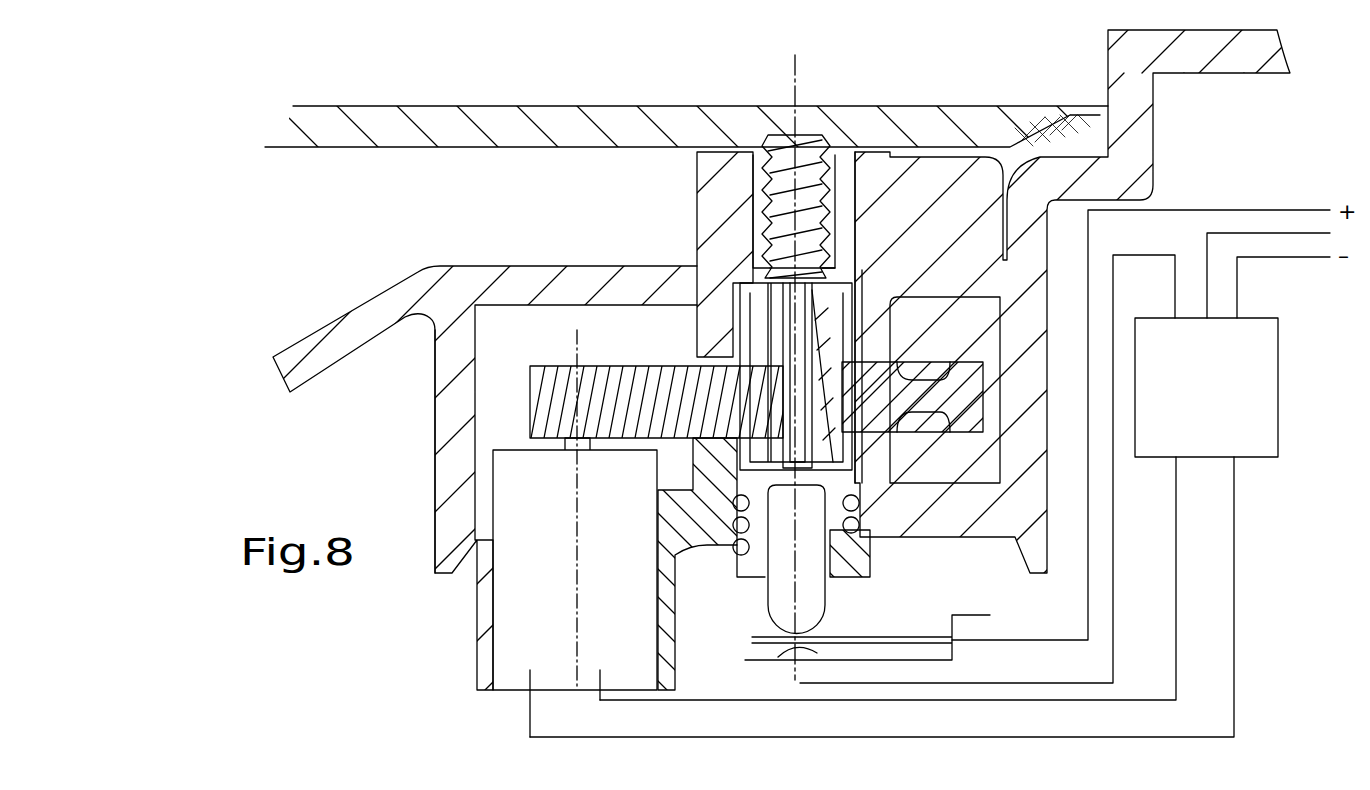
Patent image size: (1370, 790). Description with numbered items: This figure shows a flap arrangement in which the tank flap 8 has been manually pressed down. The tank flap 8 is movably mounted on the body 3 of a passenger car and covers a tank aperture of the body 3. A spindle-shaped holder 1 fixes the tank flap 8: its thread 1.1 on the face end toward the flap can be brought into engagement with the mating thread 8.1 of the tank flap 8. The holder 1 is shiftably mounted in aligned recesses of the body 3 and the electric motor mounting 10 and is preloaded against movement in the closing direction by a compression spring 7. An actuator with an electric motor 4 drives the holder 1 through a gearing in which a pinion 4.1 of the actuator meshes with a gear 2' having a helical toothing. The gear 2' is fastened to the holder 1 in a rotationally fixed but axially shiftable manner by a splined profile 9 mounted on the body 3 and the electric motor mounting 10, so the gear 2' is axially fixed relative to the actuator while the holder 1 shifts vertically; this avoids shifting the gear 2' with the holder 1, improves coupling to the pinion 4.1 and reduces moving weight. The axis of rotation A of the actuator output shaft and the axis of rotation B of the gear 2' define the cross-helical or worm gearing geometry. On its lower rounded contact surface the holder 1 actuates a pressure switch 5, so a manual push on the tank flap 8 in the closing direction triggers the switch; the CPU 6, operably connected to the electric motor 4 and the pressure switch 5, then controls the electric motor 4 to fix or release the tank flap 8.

The holder 1 is at (793, 605).
The thread 1.1 is at (818, 220).
The gear 2' is at (1066, 301).
The body 3 is at (362, 317).
The electric motor 4 is at (562, 583).
The pinion 4.1 is at (540, 397).
The pressure switch 5 is at (838, 640).
The CPU 6 is at (1211, 403).
The compression spring 7 is at (893, 535).
The tank flap 8 is at (507, 128).
The mating thread 8.1 is at (768, 186).
The splined profile 9 is at (777, 333).
The electric motor mounting 10 is at (485, 620).
The axis of rotation of the output shaft of the actuator A is at (573, 700).
The axis of rotation of the gear B is at (795, 78).